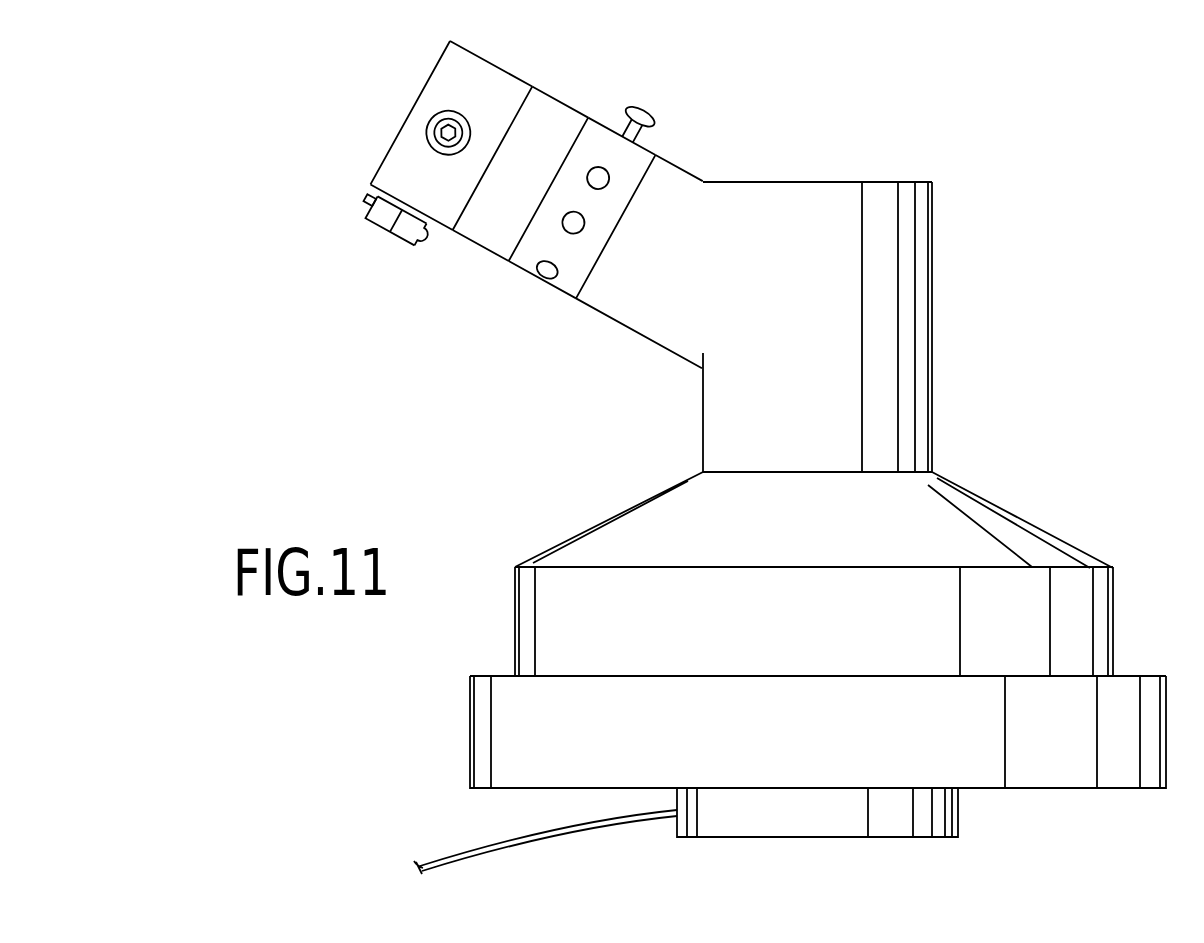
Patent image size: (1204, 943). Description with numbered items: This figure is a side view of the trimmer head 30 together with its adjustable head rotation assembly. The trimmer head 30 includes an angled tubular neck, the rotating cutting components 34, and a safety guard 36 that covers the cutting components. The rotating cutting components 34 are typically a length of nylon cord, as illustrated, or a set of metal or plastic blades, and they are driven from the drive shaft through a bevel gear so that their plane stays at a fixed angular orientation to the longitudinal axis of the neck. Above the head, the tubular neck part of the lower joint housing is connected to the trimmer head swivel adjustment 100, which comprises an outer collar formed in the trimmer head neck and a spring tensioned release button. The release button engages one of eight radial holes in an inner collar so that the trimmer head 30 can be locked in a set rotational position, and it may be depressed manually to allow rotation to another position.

The trimmer head 30 is at (945, 388).
The rotating cutting components 34 is at (545, 833).
The safety guard 36 is at (520, 725).
The trimmer head swivel adjustment 100 is at (576, 204).